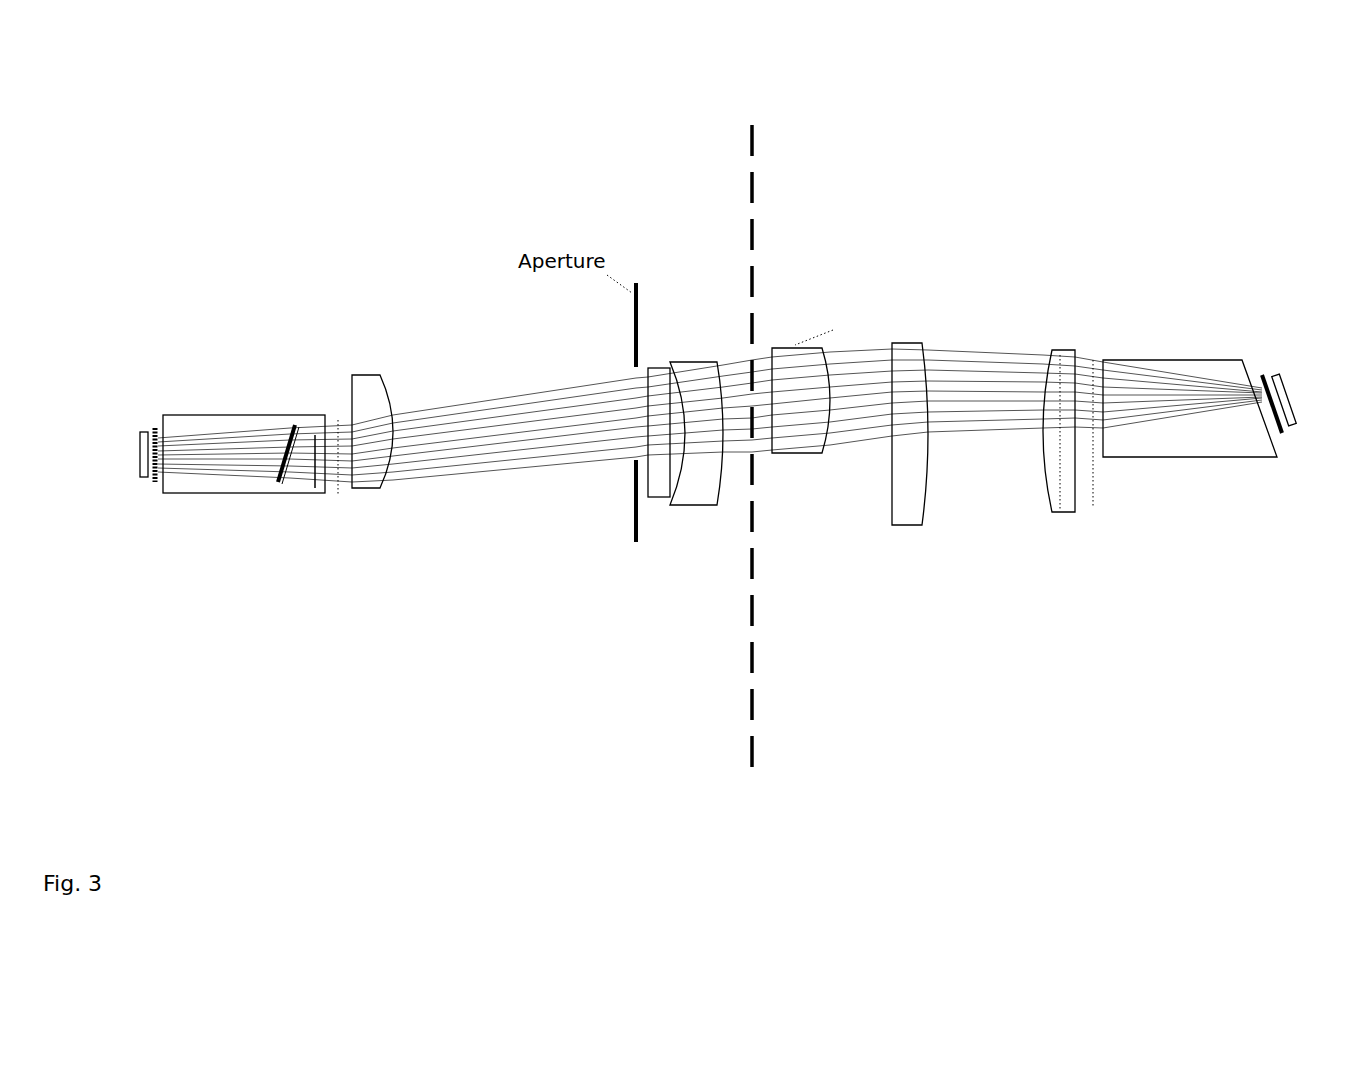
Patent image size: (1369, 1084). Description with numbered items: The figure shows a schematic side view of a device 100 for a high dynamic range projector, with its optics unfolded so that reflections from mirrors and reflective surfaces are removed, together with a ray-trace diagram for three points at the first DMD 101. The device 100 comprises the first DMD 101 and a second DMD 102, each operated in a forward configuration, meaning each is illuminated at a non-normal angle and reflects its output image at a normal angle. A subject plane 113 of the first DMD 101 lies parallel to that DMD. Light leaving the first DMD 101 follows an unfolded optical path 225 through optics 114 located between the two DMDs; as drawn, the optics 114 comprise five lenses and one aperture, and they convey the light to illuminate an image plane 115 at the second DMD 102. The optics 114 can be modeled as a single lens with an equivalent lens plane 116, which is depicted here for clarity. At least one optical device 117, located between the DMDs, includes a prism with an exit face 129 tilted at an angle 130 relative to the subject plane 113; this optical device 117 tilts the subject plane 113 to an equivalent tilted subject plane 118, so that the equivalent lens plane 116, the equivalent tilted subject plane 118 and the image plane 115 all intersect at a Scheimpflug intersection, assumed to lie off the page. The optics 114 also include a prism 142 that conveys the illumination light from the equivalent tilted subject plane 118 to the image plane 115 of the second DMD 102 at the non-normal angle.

The device 100 is at (184, 712).
The first DMD 101 is at (140, 455).
The subject plane 113 is at (153, 427).
The optical device 117 is at (192, 493).
The equivalent tilted subject plane 118 is at (275, 488).
The angle 130 is at (305, 460).
The exit face 129 is at (317, 482).
The unfolded optical path 225 is at (457, 413).
The optics 114 is at (1267, 540).
The equivalent lens plane 116 is at (755, 183).
The prism 142 is at (1168, 358).
The image plane 115 is at (1285, 433).
The second DMD 102 is at (1285, 390).